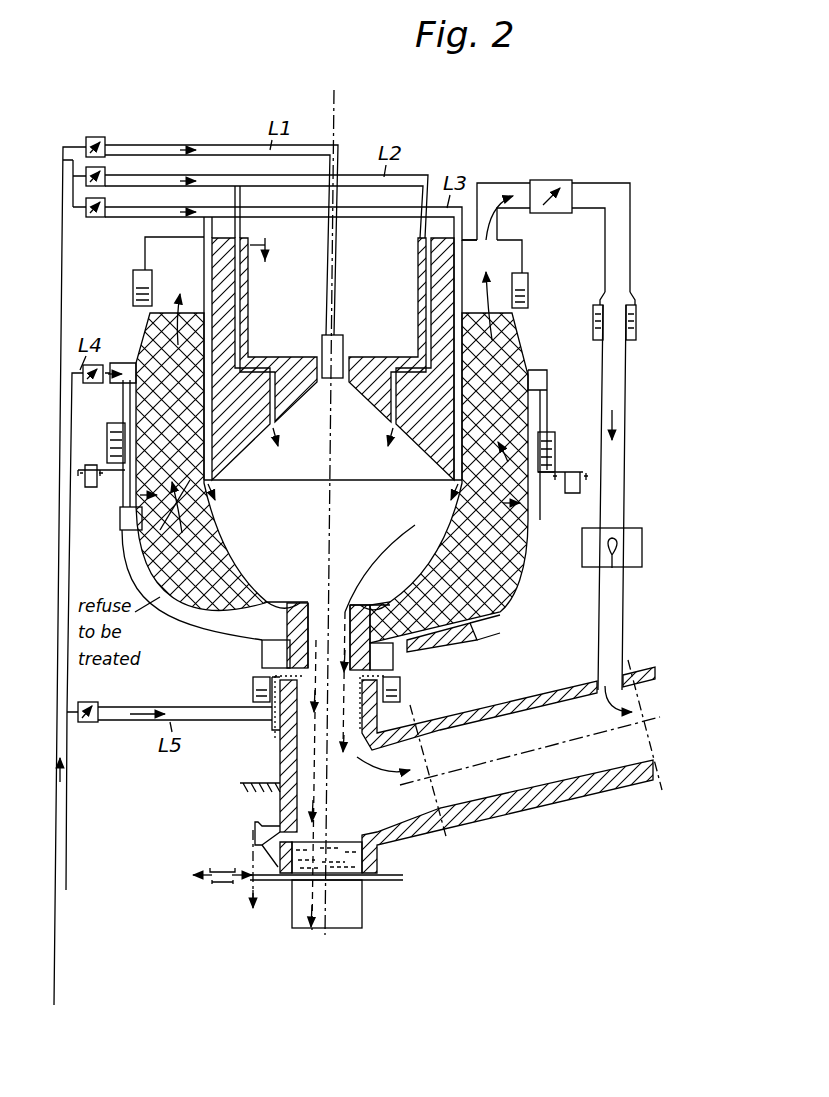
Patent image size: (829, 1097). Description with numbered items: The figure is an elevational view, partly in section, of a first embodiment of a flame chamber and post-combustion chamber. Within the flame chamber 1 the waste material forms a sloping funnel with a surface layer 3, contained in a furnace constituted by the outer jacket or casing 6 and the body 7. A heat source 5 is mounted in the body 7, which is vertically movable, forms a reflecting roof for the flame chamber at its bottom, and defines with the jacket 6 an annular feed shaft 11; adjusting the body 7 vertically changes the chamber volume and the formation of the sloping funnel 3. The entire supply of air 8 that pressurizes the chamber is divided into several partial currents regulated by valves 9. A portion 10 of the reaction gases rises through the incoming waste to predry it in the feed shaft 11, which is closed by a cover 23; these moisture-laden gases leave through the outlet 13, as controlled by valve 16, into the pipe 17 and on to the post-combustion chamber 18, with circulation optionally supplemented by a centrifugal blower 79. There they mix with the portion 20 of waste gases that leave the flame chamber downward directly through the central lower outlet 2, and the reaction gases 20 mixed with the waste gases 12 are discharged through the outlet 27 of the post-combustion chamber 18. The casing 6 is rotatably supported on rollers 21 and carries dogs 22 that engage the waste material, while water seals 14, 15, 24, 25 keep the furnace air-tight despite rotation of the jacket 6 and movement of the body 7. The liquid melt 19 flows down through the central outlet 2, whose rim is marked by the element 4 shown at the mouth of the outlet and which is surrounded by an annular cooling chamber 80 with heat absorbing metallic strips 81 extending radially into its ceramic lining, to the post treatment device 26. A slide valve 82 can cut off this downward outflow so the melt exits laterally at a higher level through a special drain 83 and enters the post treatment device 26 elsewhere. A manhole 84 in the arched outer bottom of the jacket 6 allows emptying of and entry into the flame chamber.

The flame chamber 1 is at (340, 510).
The central lower outlet 2 is at (333, 600).
The sloping funnel surface layer 3 is at (240, 586).
The outlet lip 4 is at (287, 601).
The heat source 5 is at (340, 348).
The outer jacket or casing 6 is at (176, 608).
The body 7 is at (238, 446).
The supply of air 8 is at (64, 820).
The valves 9 is at (102, 207).
The portion of reaction gases 10 is at (230, 548).
The annular passageway or feed shaft 11 is at (152, 350).
The waste gases 12 is at (183, 290).
The outlet 13 is at (503, 192).
The water seal 14 is at (134, 278).
The water seal 15 is at (107, 456).
The valve 16 is at (553, 187).
The pipe 17 is at (604, 389).
The post-combustion chamber 18 is at (568, 758).
The liquid melt 19 is at (272, 748).
The portion of flame-chamber waste gases 20 is at (383, 773).
The rollers 21 is at (91, 488).
The dogs 22 is at (126, 538).
The cover 23 is at (148, 239).
The water seal 24 is at (253, 689).
The water seal 25 is at (594, 322).
The post treatment device 26 is at (362, 912).
The outlet 27 is at (622, 700).
The centrifugal blower 79 is at (590, 567).
The annular cooling chamber 80 is at (262, 653).
The heat absorbing metallic strips 81 is at (375, 650).
The slide valve 82 is at (222, 890).
The special drain or outlet 83 is at (256, 828).
The manhole 84 is at (478, 628).